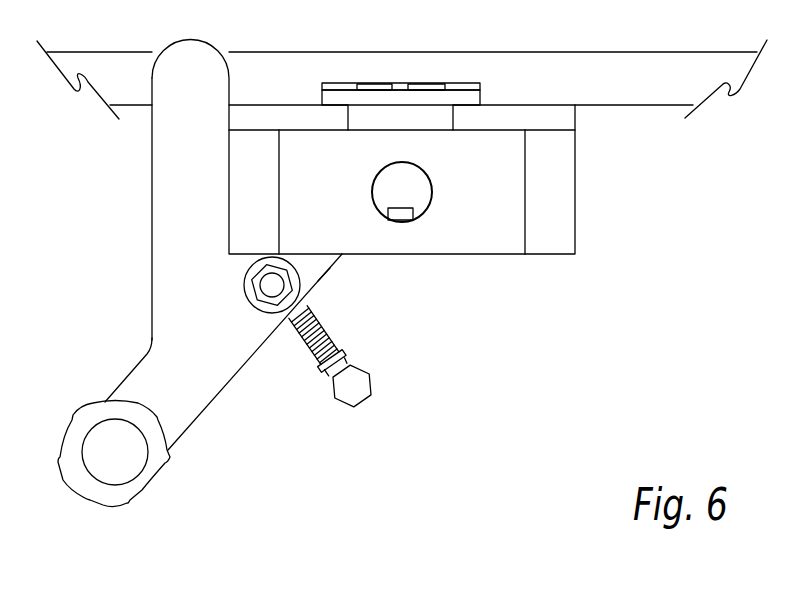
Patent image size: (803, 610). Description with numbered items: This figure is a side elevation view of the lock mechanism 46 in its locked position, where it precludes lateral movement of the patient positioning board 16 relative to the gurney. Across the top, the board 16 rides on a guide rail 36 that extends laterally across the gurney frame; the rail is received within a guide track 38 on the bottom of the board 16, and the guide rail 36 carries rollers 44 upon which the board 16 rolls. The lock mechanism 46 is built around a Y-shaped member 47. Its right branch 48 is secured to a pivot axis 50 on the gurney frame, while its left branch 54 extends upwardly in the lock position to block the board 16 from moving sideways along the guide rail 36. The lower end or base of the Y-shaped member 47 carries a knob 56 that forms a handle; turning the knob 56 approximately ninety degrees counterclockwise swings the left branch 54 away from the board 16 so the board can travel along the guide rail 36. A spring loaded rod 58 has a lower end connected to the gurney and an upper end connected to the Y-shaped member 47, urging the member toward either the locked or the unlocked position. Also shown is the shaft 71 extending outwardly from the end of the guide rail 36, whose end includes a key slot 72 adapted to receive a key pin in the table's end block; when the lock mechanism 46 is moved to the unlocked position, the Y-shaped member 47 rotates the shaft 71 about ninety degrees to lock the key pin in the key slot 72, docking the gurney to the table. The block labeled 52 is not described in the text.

The patient positioning board 16 is at (620, 63).
The guide rail 36 is at (447, 107).
The guide track 38 is at (340, 83).
The rollers 44 is at (372, 88).
The lock mechanism 46 is at (205, 412).
The Y-shaped member 47 is at (152, 262).
The right branch 48 is at (315, 272).
The pivot axis 50 is at (258, 295).
The clamp block 52 is at (500, 243).
The left branch 54 is at (172, 165).
The knob 56 is at (122, 498).
The spring loaded rod 58 is at (307, 357).
The shaft 71 is at (390, 185).
The key slot 72 is at (400, 214).